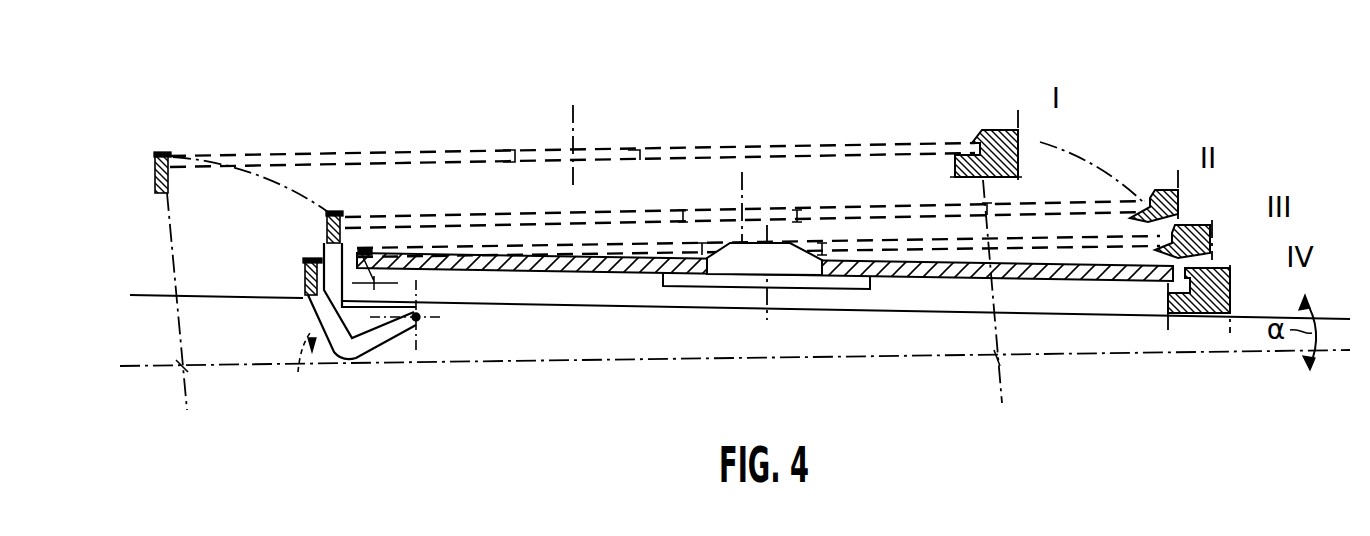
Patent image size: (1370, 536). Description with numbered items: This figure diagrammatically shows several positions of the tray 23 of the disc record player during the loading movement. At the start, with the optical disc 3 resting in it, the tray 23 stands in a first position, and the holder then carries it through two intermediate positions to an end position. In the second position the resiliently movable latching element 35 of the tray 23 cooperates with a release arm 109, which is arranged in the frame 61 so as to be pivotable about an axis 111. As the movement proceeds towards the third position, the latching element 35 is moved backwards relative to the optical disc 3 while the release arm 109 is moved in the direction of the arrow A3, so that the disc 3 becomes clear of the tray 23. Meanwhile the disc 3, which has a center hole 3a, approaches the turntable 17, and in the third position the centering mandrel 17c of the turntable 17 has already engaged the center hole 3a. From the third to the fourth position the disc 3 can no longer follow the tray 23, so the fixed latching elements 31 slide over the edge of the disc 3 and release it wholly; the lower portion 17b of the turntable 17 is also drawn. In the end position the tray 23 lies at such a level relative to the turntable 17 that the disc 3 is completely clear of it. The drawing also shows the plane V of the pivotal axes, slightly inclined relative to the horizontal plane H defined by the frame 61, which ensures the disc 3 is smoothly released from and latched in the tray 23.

The optical disc 3 is at (912, 273).
The center hole 3a is at (606, 150).
The turntable 17 is at (845, 278).
The support plate base 17b is at (688, 274).
The centering mandrel 17c is at (785, 260).
The tray 23 is at (1230, 286).
The fixed latching element 31 is at (988, 130).
The resiliently movable latching element 35 is at (304, 262).
The frame 61 is at (542, 327).
The release arm 109 is at (353, 352).
The axis 111 is at (420, 319).
The arrow A3 is at (296, 367).
The horizontal plane H is at (1018, 318).
The plane V is at (1018, 368).